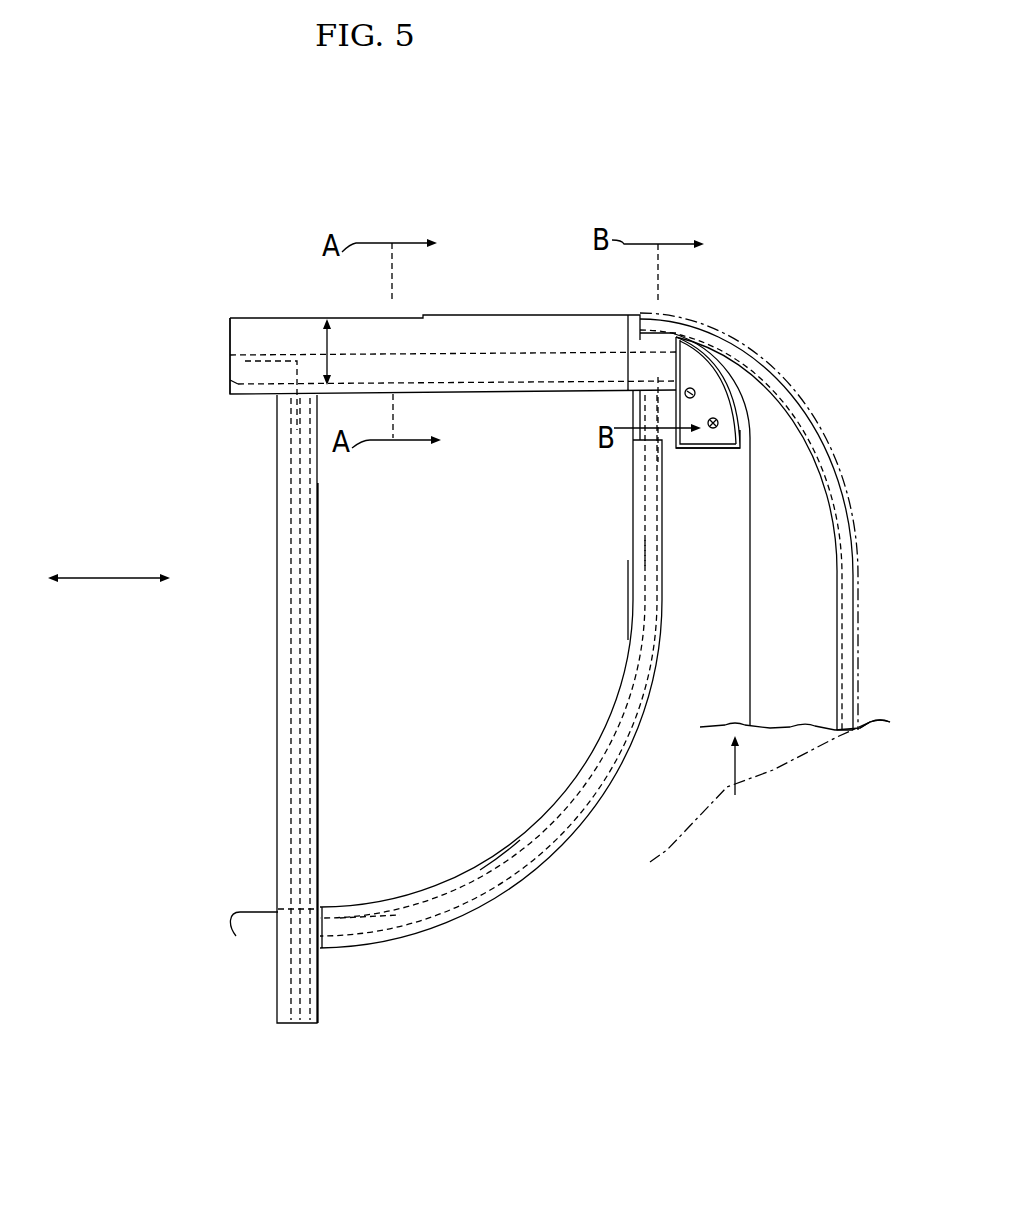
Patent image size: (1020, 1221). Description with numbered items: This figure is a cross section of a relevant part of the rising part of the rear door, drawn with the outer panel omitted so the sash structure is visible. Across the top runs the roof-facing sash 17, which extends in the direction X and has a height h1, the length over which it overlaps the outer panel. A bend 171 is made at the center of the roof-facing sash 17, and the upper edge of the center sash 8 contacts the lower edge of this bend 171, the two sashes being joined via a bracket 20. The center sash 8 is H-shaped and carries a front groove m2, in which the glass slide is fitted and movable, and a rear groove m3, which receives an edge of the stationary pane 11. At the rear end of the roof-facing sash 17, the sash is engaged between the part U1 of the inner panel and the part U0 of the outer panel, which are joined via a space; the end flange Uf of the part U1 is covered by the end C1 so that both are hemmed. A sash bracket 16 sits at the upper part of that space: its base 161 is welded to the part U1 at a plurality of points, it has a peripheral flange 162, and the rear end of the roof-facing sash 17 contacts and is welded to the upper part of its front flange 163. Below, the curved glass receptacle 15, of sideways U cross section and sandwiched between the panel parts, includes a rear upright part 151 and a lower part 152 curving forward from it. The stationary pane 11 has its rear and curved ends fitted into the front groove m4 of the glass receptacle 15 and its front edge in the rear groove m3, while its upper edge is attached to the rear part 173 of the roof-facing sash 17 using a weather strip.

The center sash 8 is at (290, 806).
The stationary pane 11 is at (500, 798).
The glass receptacle 15 is at (592, 728).
The rear upright part 151 is at (630, 597).
The lower part 152 is at (428, 905).
The sash bracket 16 is at (738, 382).
The base 161 is at (722, 436).
The peripheral flange 162 is at (720, 423).
The front flange 163 is at (690, 450).
The roof-facing sash 17 is at (508, 308).
The bend 171 is at (230, 398).
The rear part 173 is at (544, 368).
The bracket 20 is at (297, 362).
The height of the roof-facing sash h1 is at (327, 348).
The front groove m2 is at (280, 690).
The rear groove m3 is at (320, 742).
The front groove m4 is at (624, 552).
The end flange Uf is at (836, 483).
The part of the rising part U0 is at (790, 756).
The part of the inner panel U1 is at (735, 795).
The end C1 is at (880, 721).
The direction X is at (106, 575).